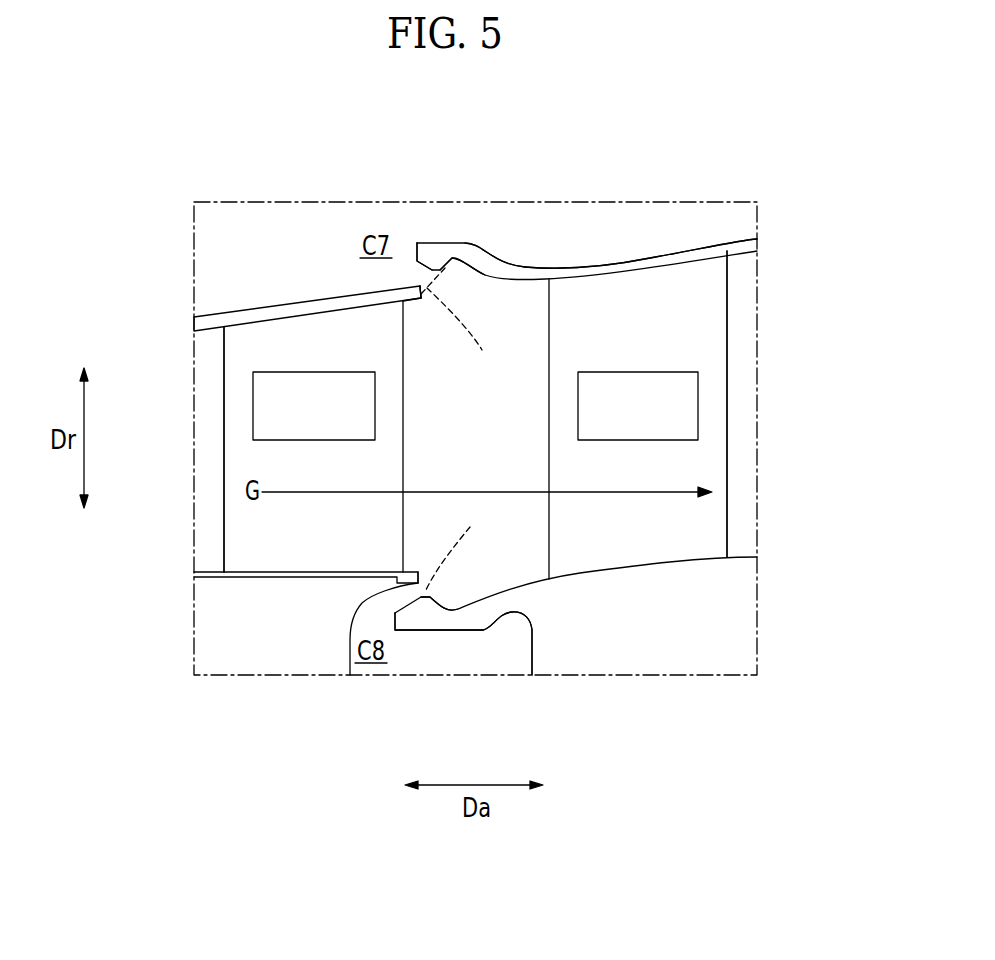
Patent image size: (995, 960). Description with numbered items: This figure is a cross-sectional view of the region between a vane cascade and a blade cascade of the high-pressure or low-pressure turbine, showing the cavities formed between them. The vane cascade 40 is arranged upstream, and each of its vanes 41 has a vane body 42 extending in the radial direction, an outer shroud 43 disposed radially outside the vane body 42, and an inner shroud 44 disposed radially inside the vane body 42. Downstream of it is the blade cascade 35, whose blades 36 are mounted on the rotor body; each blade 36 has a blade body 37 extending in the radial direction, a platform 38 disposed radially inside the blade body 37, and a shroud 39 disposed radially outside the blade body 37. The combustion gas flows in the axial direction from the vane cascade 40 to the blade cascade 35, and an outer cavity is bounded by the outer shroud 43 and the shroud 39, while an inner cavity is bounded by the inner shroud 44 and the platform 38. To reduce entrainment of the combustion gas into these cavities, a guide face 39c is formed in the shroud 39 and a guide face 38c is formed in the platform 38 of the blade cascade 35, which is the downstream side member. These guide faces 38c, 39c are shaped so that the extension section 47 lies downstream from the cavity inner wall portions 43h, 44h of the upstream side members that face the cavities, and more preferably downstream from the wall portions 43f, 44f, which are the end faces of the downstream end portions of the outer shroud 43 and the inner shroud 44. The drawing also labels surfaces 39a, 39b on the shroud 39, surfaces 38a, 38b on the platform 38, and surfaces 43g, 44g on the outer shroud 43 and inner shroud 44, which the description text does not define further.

The blade cascade 35 is at (690, 231).
The blade 36 is at (715, 347).
The blade body 37 is at (710, 312).
The platform 38 is at (695, 557).
The inner platform hook portion 38a is at (490, 613).
The inner platform bottom portion 38b is at (432, 620).
The guide face 38c is at (447, 604).
The shroud 39 is at (740, 242).
The outer platform top surface 39a is at (505, 265).
The outer platform front portion 39b is at (437, 258).
The guide face 39c is at (455, 258).
The vane cascade 40 is at (325, 286).
The vane 41 is at (244, 458).
The vane body 42 is at (237, 356).
The outer shroud 43 is at (270, 310).
The wall portion 43f is at (426, 285).
The outer shroud inner surface 43g is at (413, 301).
The cavity inner wall portion 43h is at (418, 285).
The inner shroud 44 is at (237, 570).
The wall portion 44f is at (417, 562).
The inner shroud gas path surface 44g is at (400, 577).
The cavity inner wall portion 44h is at (357, 602).
The extension section 47 is at (466, 440).